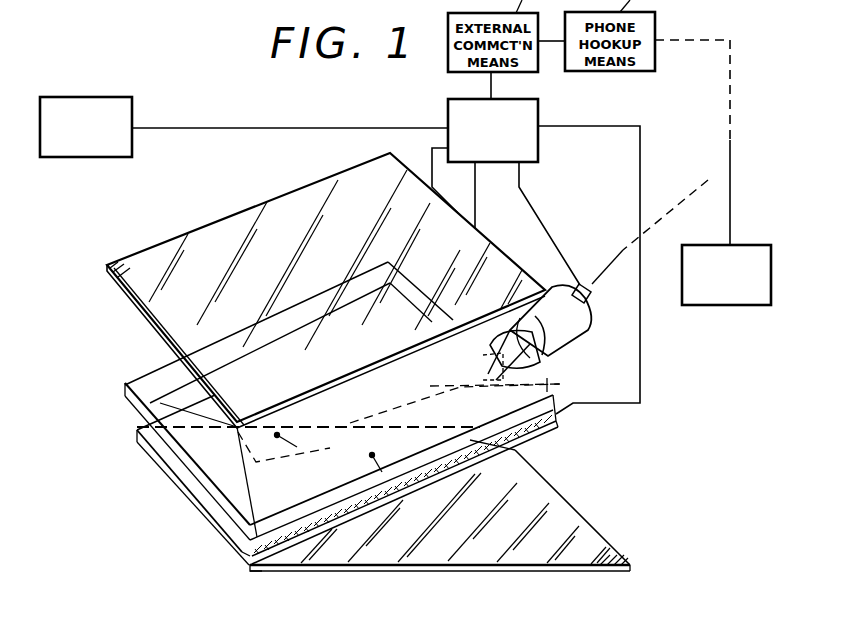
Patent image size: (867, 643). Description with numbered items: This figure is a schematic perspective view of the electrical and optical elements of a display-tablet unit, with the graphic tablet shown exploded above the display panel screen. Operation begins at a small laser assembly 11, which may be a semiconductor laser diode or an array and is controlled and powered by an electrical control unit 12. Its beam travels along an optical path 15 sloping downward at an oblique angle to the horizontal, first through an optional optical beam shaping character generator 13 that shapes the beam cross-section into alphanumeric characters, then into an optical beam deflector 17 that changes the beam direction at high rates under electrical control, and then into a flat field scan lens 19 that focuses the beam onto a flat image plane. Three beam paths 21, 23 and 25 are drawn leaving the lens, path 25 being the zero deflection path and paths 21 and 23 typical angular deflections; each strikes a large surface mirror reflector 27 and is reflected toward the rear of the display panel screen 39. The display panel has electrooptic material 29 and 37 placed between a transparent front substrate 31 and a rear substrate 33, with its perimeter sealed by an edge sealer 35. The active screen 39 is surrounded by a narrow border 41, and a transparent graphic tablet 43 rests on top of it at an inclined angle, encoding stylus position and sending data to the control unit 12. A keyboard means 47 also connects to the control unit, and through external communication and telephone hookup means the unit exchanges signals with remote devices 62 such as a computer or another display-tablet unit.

The laser assembly 11 is at (590, 298).
The electrical control unit 12 is at (538, 106).
The optical beam shaping character generator 13 is at (587, 330).
The optical path 15 is at (694, 194).
The optical beam deflector 17 is at (540, 364).
The flat field scan lens 19 is at (550, 384).
The optical beam path 21 is at (500, 497).
The optical beam path 23 is at (230, 447).
The optical beam path 25 is at (340, 448).
The large surface mirror reflector 27 is at (388, 553).
The electrooptic material 29 is at (189, 443).
The front substrate 31 is at (236, 552).
The rear substrate 33 is at (545, 430).
The edge sealer 35 is at (248, 562).
The electrooptic material 37 is at (293, 547).
The display panel screen 39 is at (162, 396).
The narrow border 41 is at (125, 392).
The transparent graphic tablet 43 is at (160, 248).
The keyboard means 47 is at (84, 97).
The remote devices 62 is at (750, 245).